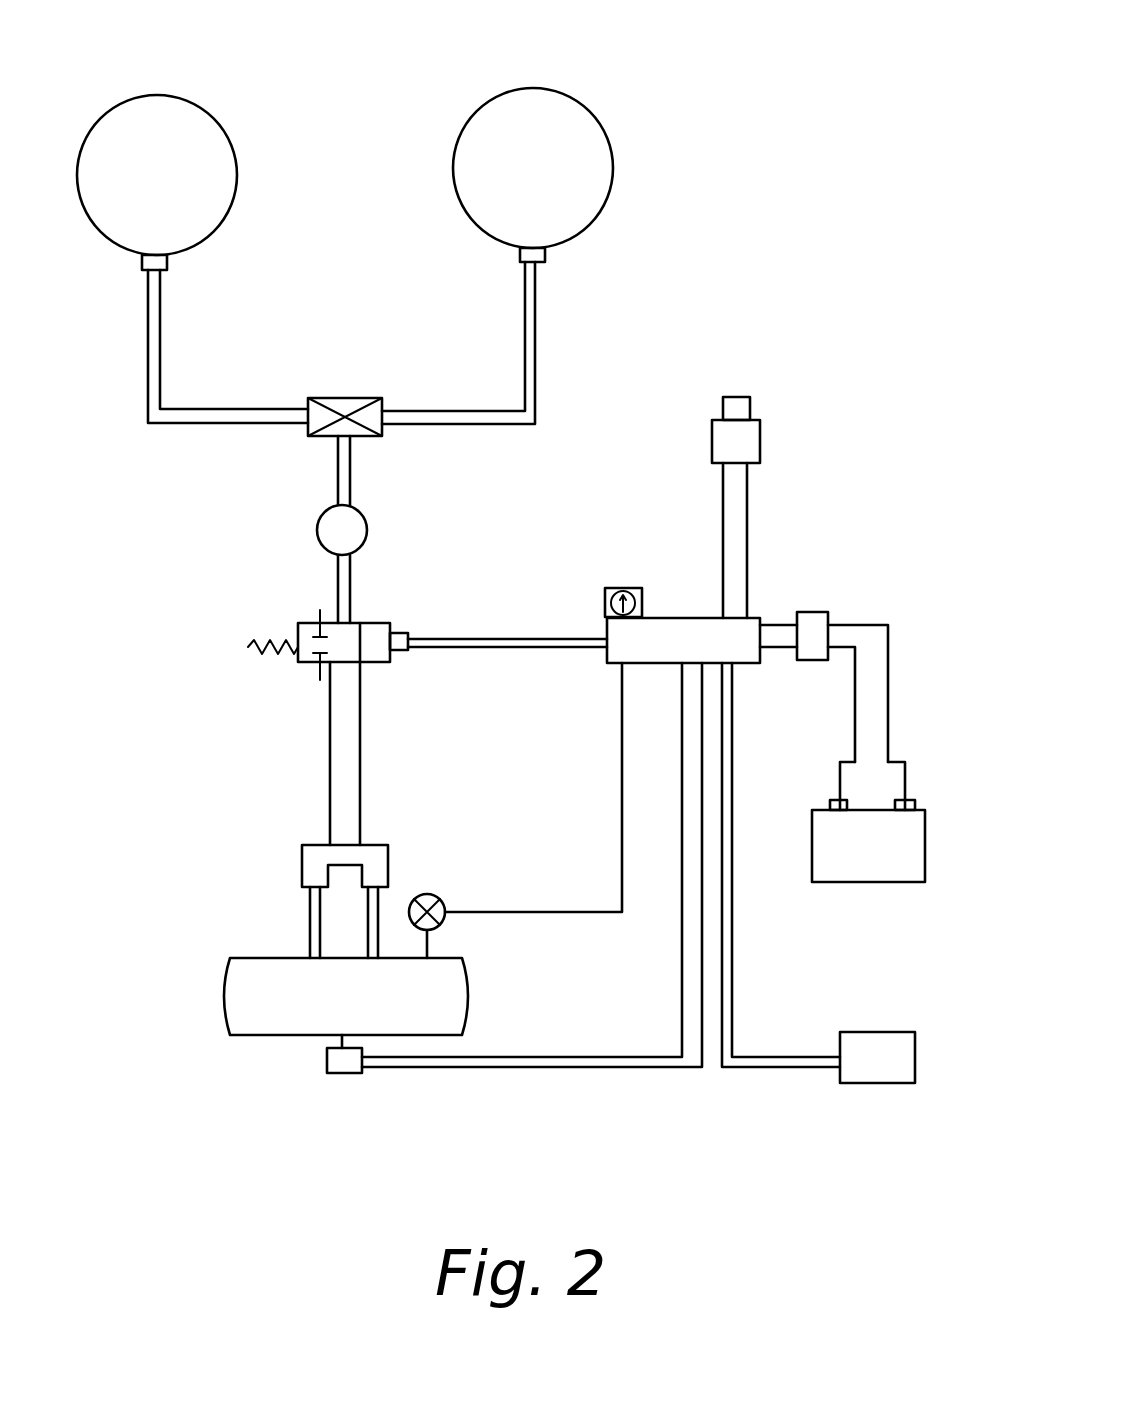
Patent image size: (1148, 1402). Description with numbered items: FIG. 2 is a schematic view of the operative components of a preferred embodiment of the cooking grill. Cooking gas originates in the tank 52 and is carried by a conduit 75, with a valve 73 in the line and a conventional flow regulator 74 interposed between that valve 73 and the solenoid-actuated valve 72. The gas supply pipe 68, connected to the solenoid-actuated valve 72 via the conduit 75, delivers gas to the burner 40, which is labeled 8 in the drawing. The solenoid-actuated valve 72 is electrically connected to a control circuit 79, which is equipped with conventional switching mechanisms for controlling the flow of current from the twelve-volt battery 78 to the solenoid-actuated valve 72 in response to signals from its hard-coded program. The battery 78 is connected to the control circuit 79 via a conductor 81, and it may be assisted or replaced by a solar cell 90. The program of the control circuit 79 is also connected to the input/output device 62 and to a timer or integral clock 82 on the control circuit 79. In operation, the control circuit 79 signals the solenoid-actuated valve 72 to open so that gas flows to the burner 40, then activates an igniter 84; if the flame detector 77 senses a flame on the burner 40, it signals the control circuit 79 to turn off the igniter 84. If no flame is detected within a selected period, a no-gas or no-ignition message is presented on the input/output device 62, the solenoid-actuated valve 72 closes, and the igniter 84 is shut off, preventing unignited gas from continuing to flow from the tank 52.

The tank 52 is at (195, 103).
The conduit 75 is at (160, 380).
The valve 73 is at (330, 397).
The flow regulator 74 is at (367, 528).
The solenoid-actuated valve 72 is at (390, 623).
The gas supply pipe 68 is at (377, 845).
The flame detector 77 is at (437, 900).
The burner 40 is at (232, 1033).
The tank label 8 is at (342, 996).
The igniter 84 is at (343, 1075).
The solar cell 90 is at (877, 1083).
The input/output device 62 is at (760, 447).
The timer or integral clock 82 is at (628, 590).
The control circuit 79 is at (735, 663).
The conductor 81 is at (888, 672).
The 12-volt battery 78 is at (882, 882).